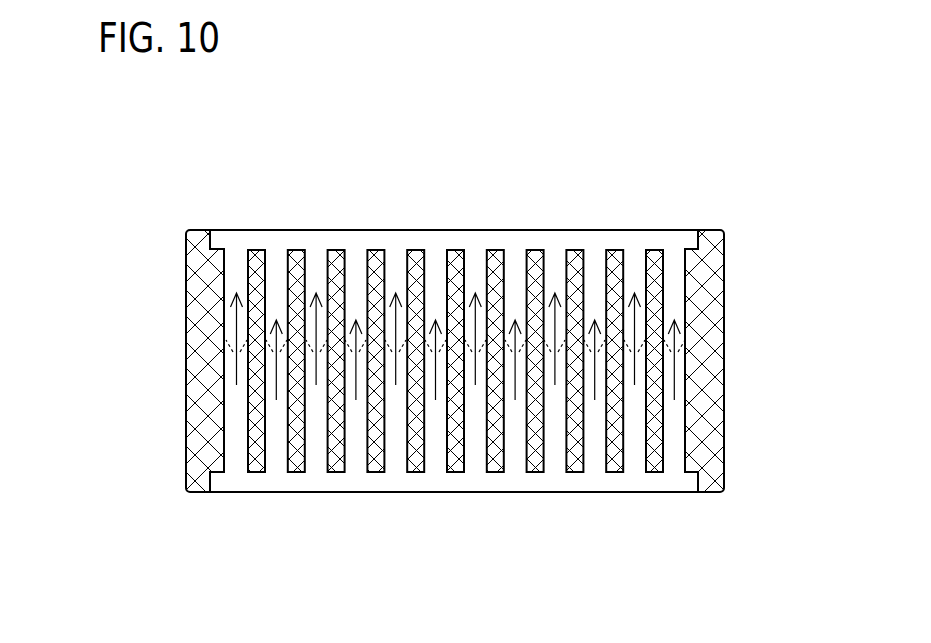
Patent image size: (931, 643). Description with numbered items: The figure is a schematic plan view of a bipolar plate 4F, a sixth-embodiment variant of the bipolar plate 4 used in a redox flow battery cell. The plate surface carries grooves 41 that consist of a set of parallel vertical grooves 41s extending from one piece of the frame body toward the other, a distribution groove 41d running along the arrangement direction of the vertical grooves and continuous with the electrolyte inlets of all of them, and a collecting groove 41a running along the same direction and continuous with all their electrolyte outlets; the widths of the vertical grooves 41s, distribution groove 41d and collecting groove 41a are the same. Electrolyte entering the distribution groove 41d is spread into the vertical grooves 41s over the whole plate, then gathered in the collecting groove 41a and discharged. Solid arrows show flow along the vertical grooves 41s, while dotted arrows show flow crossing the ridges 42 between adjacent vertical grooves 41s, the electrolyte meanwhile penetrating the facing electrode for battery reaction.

The bipolar plate 4F is at (452, 231).
The bipolar plate 4 is at (454, 361).
The grooves 41 is at (448, 369).
The collecting groove 41a is at (352, 245).
The distribution groove 41d is at (355, 478).
The vertical grooves 41s is at (636, 263).
The ridges 42 is at (240, 290).